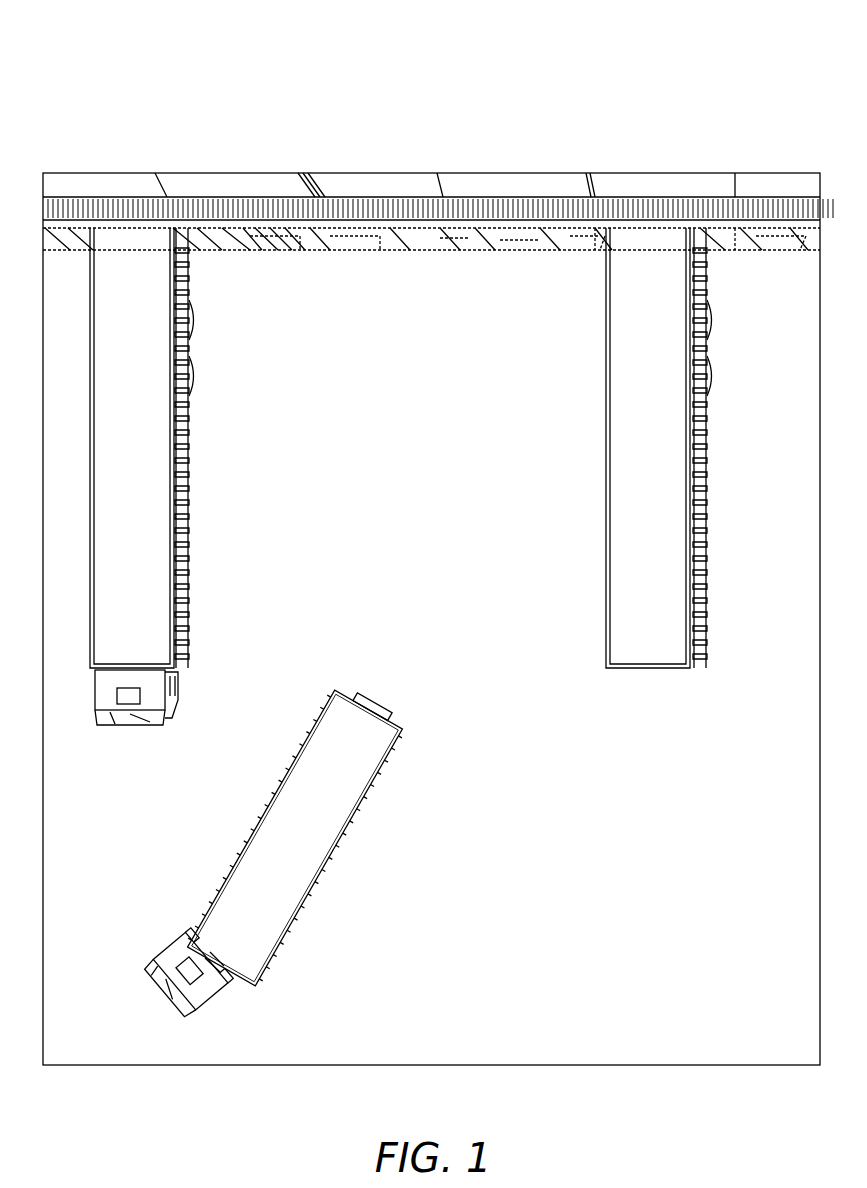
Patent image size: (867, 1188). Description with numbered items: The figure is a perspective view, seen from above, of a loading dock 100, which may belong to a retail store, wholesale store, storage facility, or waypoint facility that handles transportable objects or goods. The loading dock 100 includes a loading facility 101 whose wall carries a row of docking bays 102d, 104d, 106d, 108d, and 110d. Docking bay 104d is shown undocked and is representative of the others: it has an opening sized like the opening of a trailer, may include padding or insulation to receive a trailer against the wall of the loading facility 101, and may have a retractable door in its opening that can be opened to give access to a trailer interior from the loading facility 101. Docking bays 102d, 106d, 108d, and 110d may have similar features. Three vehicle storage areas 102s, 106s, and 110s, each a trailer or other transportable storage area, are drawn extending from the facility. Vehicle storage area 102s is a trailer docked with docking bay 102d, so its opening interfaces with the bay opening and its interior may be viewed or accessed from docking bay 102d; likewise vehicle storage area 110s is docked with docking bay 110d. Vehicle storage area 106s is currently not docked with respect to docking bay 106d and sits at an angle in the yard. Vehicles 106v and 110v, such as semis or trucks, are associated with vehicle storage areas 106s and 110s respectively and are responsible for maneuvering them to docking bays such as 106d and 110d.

The loading dock 100 is at (92, 55).
The loading facility 101 is at (765, 187).
The docking bay 102d is at (658, 187).
The docking bay 104d is at (522, 187).
The docking bay 106d is at (385, 187).
The docking bay 108d is at (228, 187).
The docking bay 110d is at (115, 187).
The vehicle storage area 102s is at (686, 455).
The vehicle storage area 106s is at (392, 725).
The vehicle storage area 110s is at (185, 545).
The vehicle 106v is at (170, 938).
The vehicle 110v is at (180, 694).